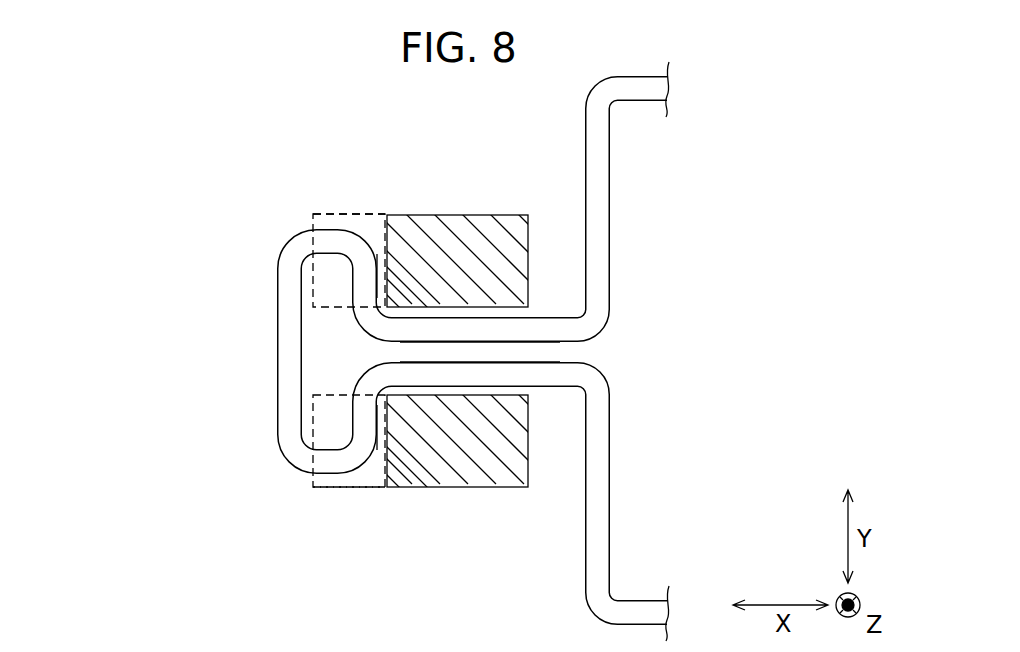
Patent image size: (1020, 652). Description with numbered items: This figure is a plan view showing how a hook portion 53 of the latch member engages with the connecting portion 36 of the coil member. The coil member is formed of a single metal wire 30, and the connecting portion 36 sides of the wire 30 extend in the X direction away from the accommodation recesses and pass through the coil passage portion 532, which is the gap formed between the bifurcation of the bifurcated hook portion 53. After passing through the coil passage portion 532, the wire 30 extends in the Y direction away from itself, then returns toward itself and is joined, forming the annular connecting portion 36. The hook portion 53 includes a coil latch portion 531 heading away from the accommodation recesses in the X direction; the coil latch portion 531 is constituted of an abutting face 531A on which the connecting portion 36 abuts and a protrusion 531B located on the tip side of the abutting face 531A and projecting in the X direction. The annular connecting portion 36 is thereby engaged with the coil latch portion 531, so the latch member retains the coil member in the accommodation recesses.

The wire 30 is at (598, 150).
The connecting portion 36 is at (296, 343).
The hook portion 53 is at (479, 215).
The coil latch portion 531 is at (306, 218).
The abutting face 531A is at (384, 240).
The protrusion 531B is at (337, 212).
The coil passage portion 532 is at (511, 346).